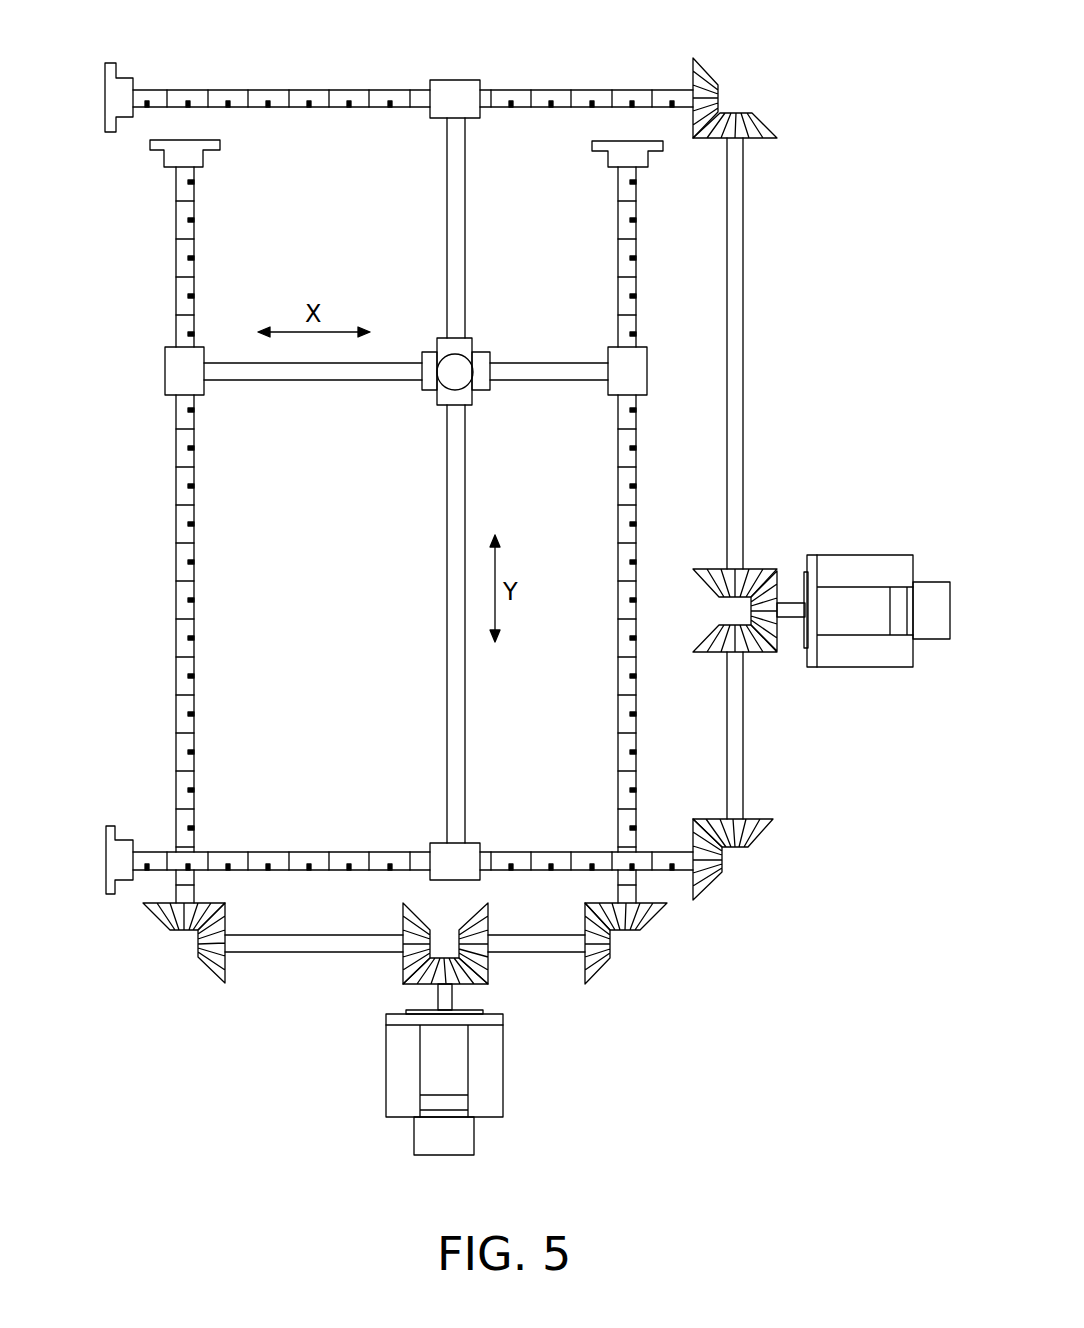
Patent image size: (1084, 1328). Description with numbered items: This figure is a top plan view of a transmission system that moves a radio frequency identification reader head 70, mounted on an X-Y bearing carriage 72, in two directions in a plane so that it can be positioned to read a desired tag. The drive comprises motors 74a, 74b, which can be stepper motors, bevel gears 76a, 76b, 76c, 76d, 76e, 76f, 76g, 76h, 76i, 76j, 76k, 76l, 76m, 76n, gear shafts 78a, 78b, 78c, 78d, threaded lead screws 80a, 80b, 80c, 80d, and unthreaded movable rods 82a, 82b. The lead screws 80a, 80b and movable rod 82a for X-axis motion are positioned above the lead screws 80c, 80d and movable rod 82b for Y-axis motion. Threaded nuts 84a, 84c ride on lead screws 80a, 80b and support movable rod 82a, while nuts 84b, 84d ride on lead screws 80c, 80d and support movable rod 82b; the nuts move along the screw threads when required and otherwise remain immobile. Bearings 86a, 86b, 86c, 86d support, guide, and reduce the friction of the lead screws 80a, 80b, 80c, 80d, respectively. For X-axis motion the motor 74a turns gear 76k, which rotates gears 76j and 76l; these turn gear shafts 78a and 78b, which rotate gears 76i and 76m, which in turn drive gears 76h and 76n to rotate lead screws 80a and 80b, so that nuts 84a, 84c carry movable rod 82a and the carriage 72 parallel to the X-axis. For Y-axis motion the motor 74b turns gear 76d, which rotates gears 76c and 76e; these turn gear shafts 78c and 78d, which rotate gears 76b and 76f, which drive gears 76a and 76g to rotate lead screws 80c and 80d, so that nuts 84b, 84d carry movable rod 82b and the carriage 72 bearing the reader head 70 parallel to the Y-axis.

The radio frequency identification reader head 70 is at (458, 362).
The X-Y bearing carriage 72 is at (443, 392).
The motor 74a is at (832, 652).
The motor 74b is at (485, 1080).
The gear 76a is at (162, 915).
The gear 76b is at (215, 957).
The gear 76c is at (410, 962).
The gear 76d is at (465, 978).
The gear 76e is at (480, 927).
The gear 76f is at (590, 960).
The gear 76g is at (642, 916).
The gear 76h is at (703, 878).
The gear 76i is at (752, 830).
The gear 76j is at (720, 655).
The gear 76k is at (770, 580).
The gear 76l is at (715, 583).
The gear 76m is at (755, 140).
The gear 76n is at (713, 88).
The gear shaft 78a is at (745, 738).
The gear shaft 78b is at (748, 340).
The gear shaft 78c is at (278, 955).
The gear shaft 78d is at (568, 934).
The lead screw 80a is at (345, 852).
The lead screw 80b is at (320, 91).
The lead screw 80c is at (176, 685).
The lead screw 80d is at (637, 520).
The movable rod 82a is at (447, 657).
The movable rod 82b is at (385, 366).
The nut 84a is at (440, 843).
The nut 84b is at (172, 373).
The nut 84c is at (448, 80).
The nut 84d is at (632, 373).
The bearing 86a is at (107, 860).
The bearing 86b is at (105, 98).
The bearing 86c is at (190, 154).
The bearing 86d is at (615, 155).